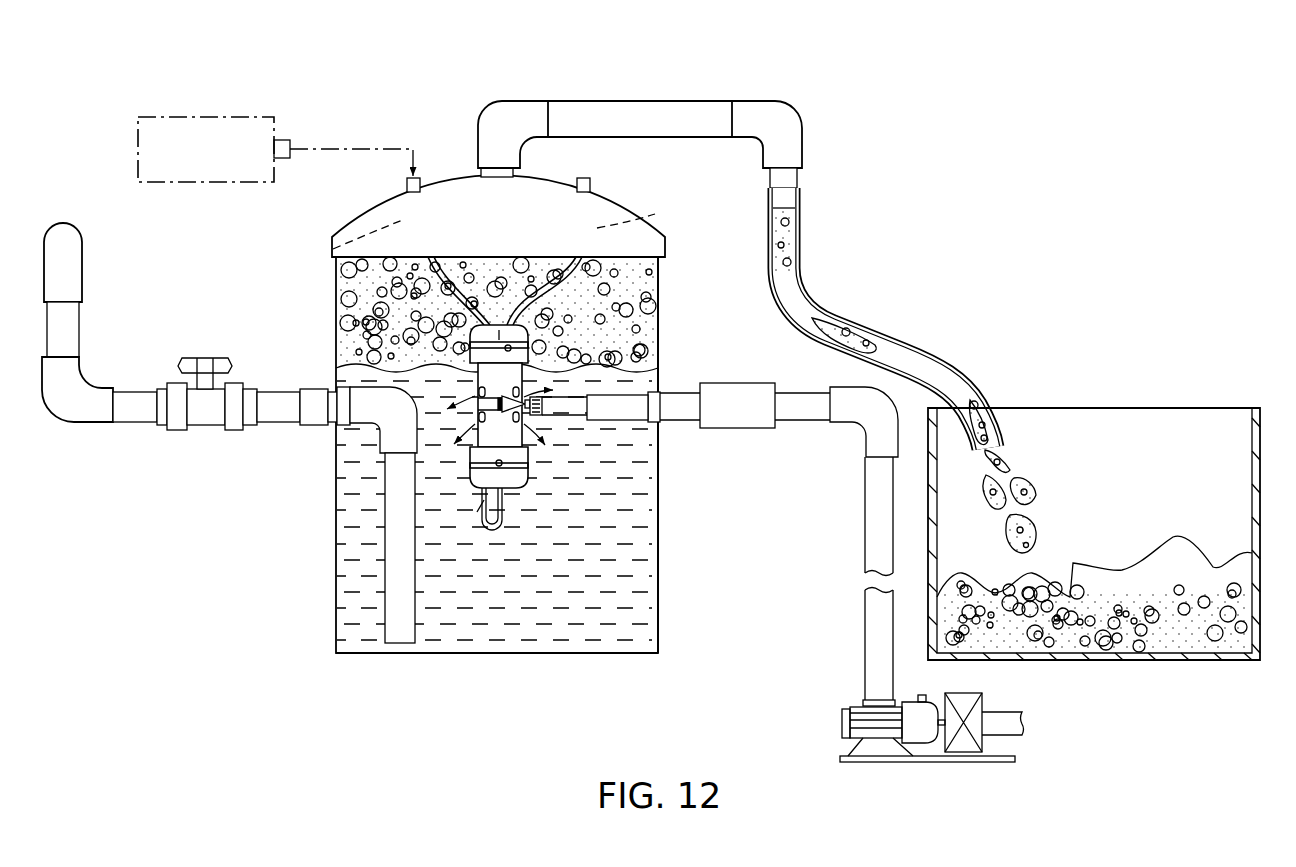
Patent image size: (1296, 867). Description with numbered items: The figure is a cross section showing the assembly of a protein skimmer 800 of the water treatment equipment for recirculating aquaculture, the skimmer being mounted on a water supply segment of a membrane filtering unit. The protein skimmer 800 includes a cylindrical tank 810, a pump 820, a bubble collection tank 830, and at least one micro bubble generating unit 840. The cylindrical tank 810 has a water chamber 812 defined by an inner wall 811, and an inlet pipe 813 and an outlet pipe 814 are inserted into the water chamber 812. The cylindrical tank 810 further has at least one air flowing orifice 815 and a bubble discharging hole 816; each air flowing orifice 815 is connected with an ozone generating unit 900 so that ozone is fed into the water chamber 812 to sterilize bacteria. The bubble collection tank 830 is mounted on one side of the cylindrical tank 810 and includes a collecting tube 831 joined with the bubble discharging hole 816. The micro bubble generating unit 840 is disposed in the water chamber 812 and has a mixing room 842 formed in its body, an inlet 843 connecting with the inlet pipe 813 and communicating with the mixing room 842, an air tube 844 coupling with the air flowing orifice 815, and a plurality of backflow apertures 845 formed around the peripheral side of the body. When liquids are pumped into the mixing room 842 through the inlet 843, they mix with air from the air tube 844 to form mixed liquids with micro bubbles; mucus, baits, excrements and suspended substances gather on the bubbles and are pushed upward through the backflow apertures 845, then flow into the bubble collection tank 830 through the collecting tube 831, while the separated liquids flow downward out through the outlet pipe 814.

The protein skimmer 800 is at (268, 630).
The cylindrical tank 810 is at (570, 660).
The inner wall 811 is at (660, 565).
The water chamber 812 is at (658, 606).
The inlet pipe 813 is at (803, 413).
The outlet pipe 814 is at (93, 410).
The air flowing orifice 815 is at (405, 183).
The bubble discharging hole 816 is at (500, 167).
The pump 820 is at (840, 722).
The bubble collection tank 830 is at (1064, 410).
The collecting tube 831 is at (695, 118).
The micro bubble generating unit 840 is at (540, 471).
The mixing room 842 is at (493, 300).
The inlet 843 is at (610, 405).
The air tube 844 is at (330, 247).
The backflow apertures 845 is at (528, 428).
The ozone generating unit 900 is at (177, 120).